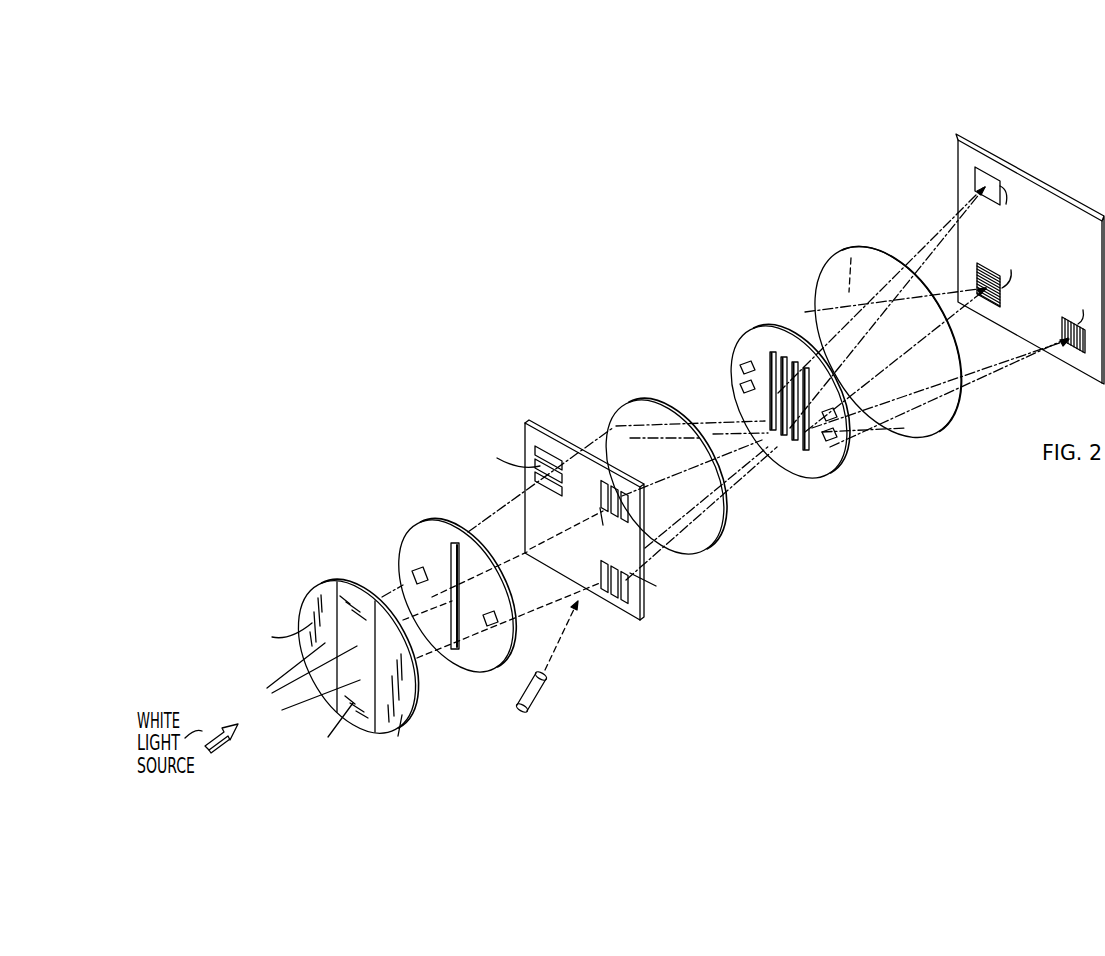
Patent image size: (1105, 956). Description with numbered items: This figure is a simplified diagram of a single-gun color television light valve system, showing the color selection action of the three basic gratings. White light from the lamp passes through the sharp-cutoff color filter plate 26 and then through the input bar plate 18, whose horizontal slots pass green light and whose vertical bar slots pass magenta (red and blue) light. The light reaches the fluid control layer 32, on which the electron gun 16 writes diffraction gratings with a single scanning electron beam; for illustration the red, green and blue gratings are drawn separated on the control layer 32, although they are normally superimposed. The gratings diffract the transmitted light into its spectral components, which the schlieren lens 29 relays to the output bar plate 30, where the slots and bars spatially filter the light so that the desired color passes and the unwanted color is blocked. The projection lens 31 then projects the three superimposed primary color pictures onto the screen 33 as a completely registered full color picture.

The electron gun 16 is at (536, 697).
The input bar plate 18 is at (425, 533).
The sharp-cutoff color filter plate 26 is at (349, 582).
The schlieren lens 29 is at (657, 405).
The output color selection bar plate 30 is at (828, 458).
The projection lens 31 is at (838, 270).
The control layer 32 is at (547, 428).
The screen 33 is at (996, 153).